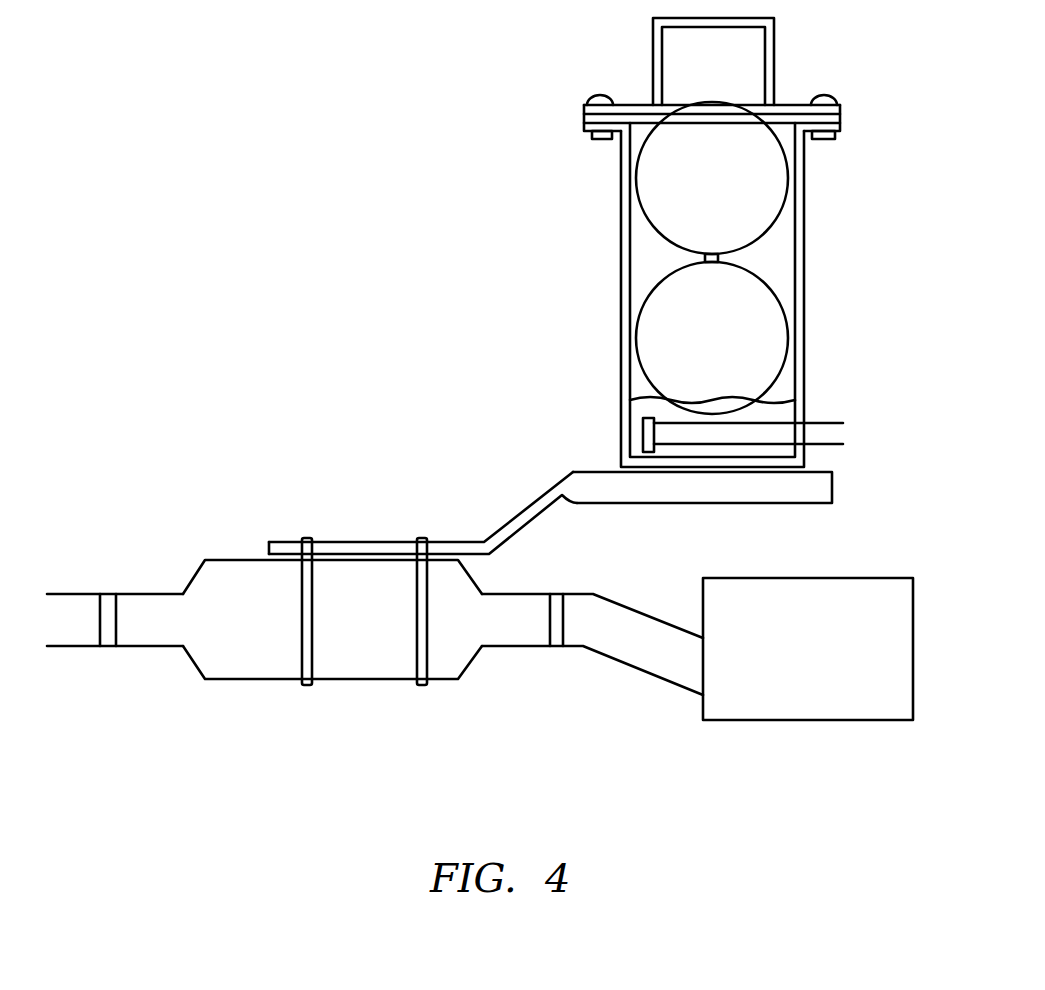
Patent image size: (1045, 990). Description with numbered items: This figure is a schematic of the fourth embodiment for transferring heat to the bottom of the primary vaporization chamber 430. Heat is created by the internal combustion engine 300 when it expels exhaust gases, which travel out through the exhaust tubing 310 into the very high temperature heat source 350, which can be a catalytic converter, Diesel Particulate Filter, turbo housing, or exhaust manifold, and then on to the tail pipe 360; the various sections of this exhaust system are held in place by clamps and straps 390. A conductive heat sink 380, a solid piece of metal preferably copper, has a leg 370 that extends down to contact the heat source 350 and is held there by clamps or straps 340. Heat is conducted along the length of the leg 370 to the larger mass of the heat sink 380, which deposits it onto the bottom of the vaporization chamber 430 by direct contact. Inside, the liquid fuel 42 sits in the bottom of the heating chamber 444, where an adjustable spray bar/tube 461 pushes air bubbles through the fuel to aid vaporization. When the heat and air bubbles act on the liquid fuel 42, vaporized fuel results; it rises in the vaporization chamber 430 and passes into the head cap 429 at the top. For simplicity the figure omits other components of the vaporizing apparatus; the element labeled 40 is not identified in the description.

The head cap 429 is at (776, 60).
The vaporization chamber 430 is at (806, 224).
The heating chamber 444 is at (645, 268).
The first ball 40 is at (657, 198).
The liquid fuel 42 is at (635, 412).
The adjustable spray bar/tube 461 is at (765, 437).
The conductive heat sink 380 is at (815, 488).
The leg 370 is at (523, 510).
The very high temperature heat source 350 is at (233, 587).
The clamps or straps 340 is at (305, 687).
The tail pipe 360 is at (68, 648).
The clamps and straps 390 is at (580, 695).
The exhaust tubing 310 is at (658, 652).
The internal combustion engine 300 is at (832, 664).